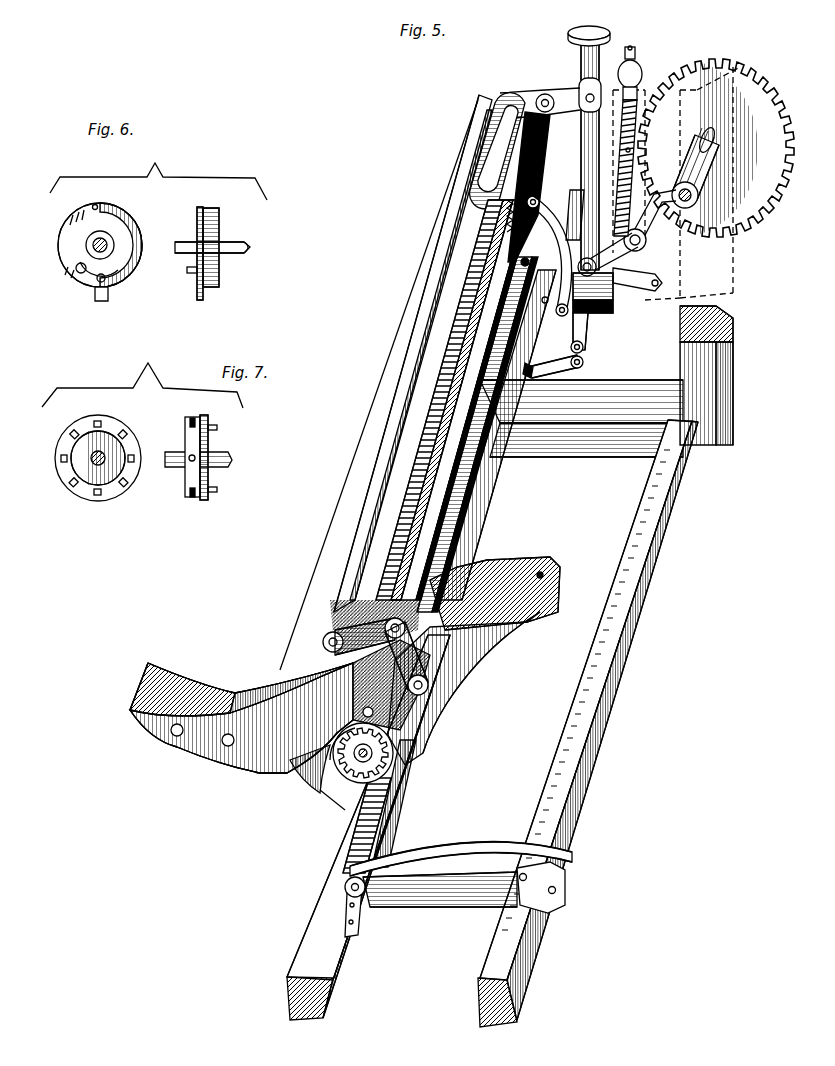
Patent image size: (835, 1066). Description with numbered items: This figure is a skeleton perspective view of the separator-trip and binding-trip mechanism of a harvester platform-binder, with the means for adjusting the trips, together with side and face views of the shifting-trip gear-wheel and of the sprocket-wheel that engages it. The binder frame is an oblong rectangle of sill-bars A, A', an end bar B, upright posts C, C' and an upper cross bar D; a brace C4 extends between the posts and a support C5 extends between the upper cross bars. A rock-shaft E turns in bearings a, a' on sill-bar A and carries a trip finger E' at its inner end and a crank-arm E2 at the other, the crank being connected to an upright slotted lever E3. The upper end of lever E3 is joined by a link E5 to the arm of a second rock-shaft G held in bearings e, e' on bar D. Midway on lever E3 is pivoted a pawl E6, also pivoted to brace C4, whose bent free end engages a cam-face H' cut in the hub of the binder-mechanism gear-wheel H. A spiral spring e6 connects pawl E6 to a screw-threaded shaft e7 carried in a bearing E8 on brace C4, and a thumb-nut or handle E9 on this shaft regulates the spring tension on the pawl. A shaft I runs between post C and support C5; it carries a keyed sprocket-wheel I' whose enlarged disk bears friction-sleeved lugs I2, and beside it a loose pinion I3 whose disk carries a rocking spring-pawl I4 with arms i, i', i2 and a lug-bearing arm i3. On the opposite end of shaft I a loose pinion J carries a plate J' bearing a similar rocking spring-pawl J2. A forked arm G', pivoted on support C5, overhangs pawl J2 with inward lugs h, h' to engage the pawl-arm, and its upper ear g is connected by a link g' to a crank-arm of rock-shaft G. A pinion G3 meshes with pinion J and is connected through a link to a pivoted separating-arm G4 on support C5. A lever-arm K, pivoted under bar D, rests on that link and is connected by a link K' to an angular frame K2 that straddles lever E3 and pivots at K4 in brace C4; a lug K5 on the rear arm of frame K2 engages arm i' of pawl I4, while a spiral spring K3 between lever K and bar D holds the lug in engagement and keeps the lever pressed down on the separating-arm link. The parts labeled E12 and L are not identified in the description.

In FIG. 5, the sill-bar A is at (368, 827).
In FIG. 5, the sill-bar A' is at (588, 723).
In FIG. 5, the bearing a is at (362, 912).
In FIG. 5, the bearing a' is at (534, 360).
In FIG. 5, the end bar B is at (581, 427).
In FIG. 5, the upright post C is at (483, 356).
In FIG. 5, the upright post C' is at (720, 375).
In FIG. 5, the cross arm or brace C4 is at (718, 272).
In FIG. 5, the arm or support C5 is at (474, 661).
In FIG. 5, the upper or cross bar D is at (398, 425).
In FIG. 5, the rock-shaft E is at (486, 434).
In FIG. 5, the trip arm or finger E' is at (458, 866).
In FIG. 5, the crank-arm E2 is at (586, 368).
In FIG. 5, the arm or lever E3 is at (588, 332).
In FIG. 5, the link E5 is at (560, 92).
In FIG. 5, the pawl E6 is at (655, 195).
In FIG. 5, the bearing E8 is at (639, 139).
In FIG. 5, the thumb-nut or handle E9 is at (580, 195).
In FIG. 5, the hand rod E12 is at (568, 33).
In FIG. 5, the bearing e is at (320, 621).
In FIG. 5, the bearing e' is at (497, 150).
In FIG. 5, the spiral spring e6 is at (632, 150).
In FIG. 5, the screw-threaded shaft e7 is at (630, 46).
In FIG. 5, the rock-shaft G is at (358, 539).
In FIG. 5, the bifurcated or forked arm G' is at (404, 724).
In FIG. 5, the pinion G3 is at (350, 778).
In FIG. 5, the separating-arm G4 is at (308, 785).
In FIG. 5, the lug or ear g is at (397, 669).
In FIG. 5, the link g' is at (415, 658).
In FIG. 5, the binder-mechanism gear-wheel H is at (716, 148).
In FIG. 5, the cam-face H' is at (700, 169).
In FIG. 5, the lug h is at (241, 731).
In FIG. 5, the lug h' is at (392, 746).
In FIG. 5, the shaft I is at (452, 400).
In FIG. 7, the shaft I is at (149, 458).
In FIG. 5, the sprocket-wheel I' is at (527, 278).
In FIG. 7, the sprocket-wheel I' is at (130, 472).
In FIG. 7, the friction-sleeved lugs I2 is at (218, 428).
In FIG. 6, the pinion I3 is at (220, 212).
In FIG. 6, the rocking spring-pawl I4 is at (114, 275).
In FIG. 6, the arm i is at (100, 252).
In FIG. 6, the arm i' is at (104, 301).
In FIG. 6, the arm i2 is at (114, 250).
In FIG. 6, the arm i3 is at (76, 263).
In FIG. 5, the pinion J is at (378, 825).
In FIG. 5, the disk or plate J' is at (398, 803).
In FIG. 5, the rocking spring-pawl J2 is at (330, 800).
In FIG. 5, the lever-arm K is at (379, 385).
In FIG. 5, the arm or link K' is at (552, 266).
In FIG. 5, the angular frame K2 is at (613, 303).
In FIG. 5, the spiral spring K3 is at (505, 190).
In FIG. 5, the pivotal connection K4 is at (660, 276).
In FIG. 5, the lug or projection K5 is at (553, 308).
In FIG. 6, the shaft L is at (250, 249).